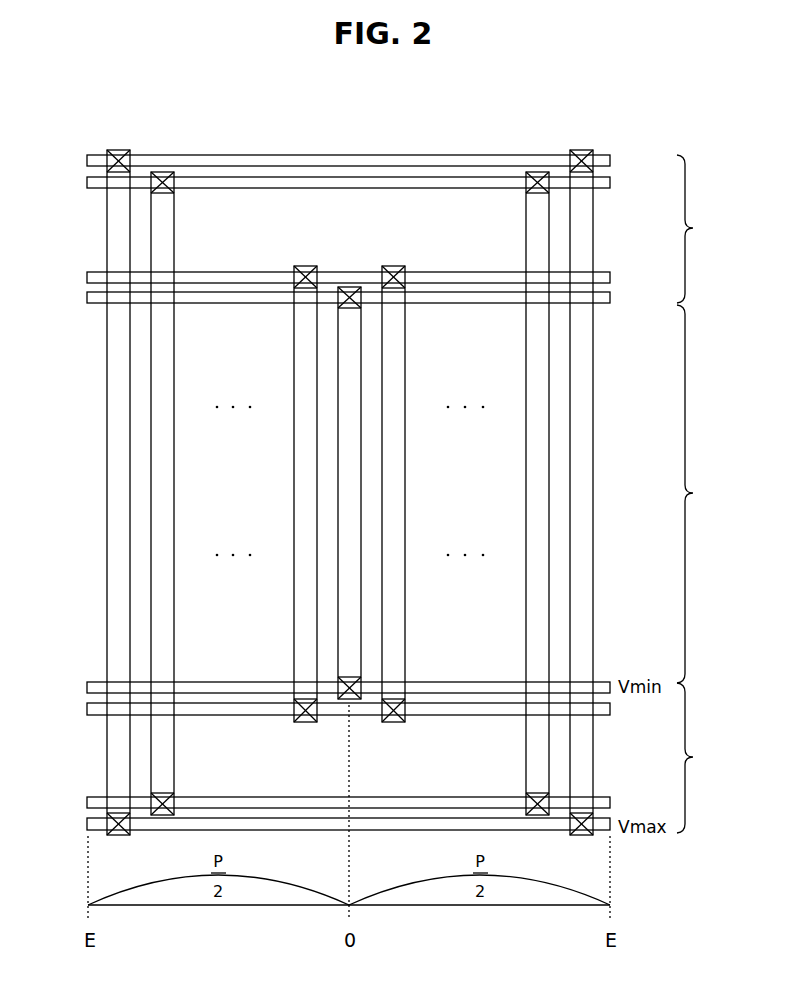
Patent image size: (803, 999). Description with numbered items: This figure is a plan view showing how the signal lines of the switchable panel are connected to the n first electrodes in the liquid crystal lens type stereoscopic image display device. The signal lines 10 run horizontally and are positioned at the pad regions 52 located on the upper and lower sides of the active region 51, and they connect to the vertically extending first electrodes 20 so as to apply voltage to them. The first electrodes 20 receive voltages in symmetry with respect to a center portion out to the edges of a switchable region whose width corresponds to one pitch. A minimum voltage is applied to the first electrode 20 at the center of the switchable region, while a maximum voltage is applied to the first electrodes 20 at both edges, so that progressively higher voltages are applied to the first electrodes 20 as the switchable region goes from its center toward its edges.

The signal lines 10 is at (353, 155).
The first electrodes 20 is at (108, 424).
The active region 51 is at (700, 494).
The pad regions 52 is at (700, 494).